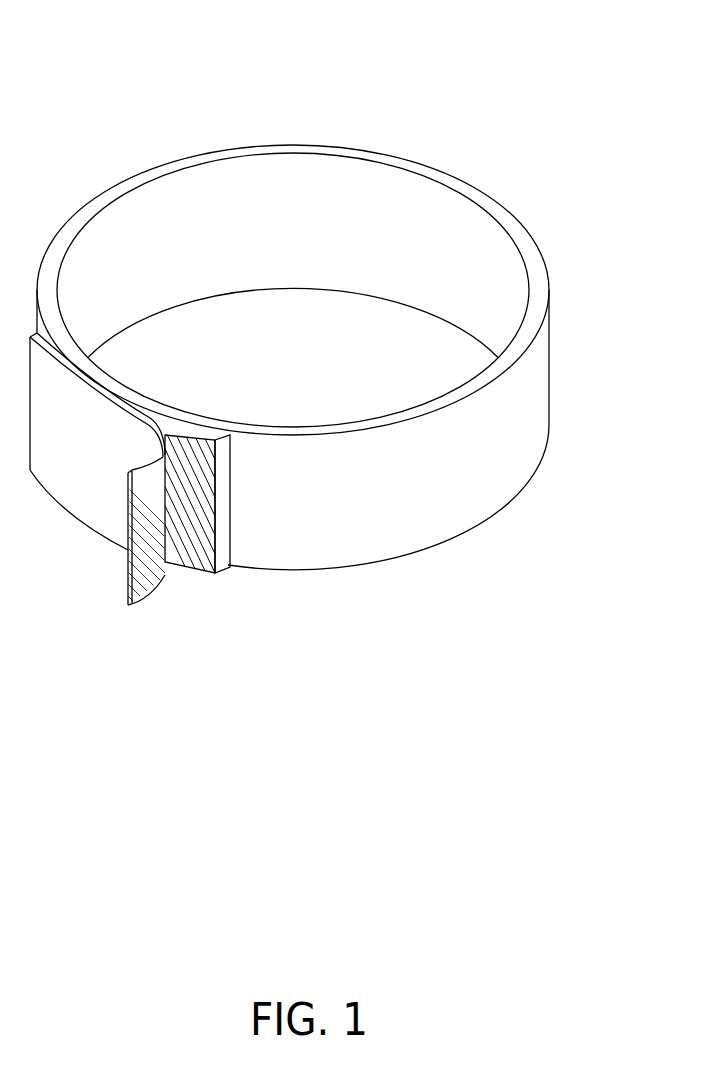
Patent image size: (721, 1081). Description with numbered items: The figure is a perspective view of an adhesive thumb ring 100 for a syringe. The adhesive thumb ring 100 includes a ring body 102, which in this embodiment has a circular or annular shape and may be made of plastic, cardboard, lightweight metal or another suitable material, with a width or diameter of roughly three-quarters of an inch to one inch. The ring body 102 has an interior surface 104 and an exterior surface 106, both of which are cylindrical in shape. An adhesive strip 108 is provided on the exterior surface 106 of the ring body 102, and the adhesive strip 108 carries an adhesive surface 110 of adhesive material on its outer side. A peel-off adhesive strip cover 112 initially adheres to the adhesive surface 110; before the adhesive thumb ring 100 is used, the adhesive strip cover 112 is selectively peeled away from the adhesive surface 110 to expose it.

The adhesive thumb ring 100 is at (128, 78).
The ring body 102 is at (523, 225).
The interior surface 104 is at (435, 297).
The exterior surface 106 is at (505, 481).
The adhesive strip 108 is at (226, 528).
The adhesive surface 110 is at (208, 470).
The adhesive strip cover 112 is at (128, 578).